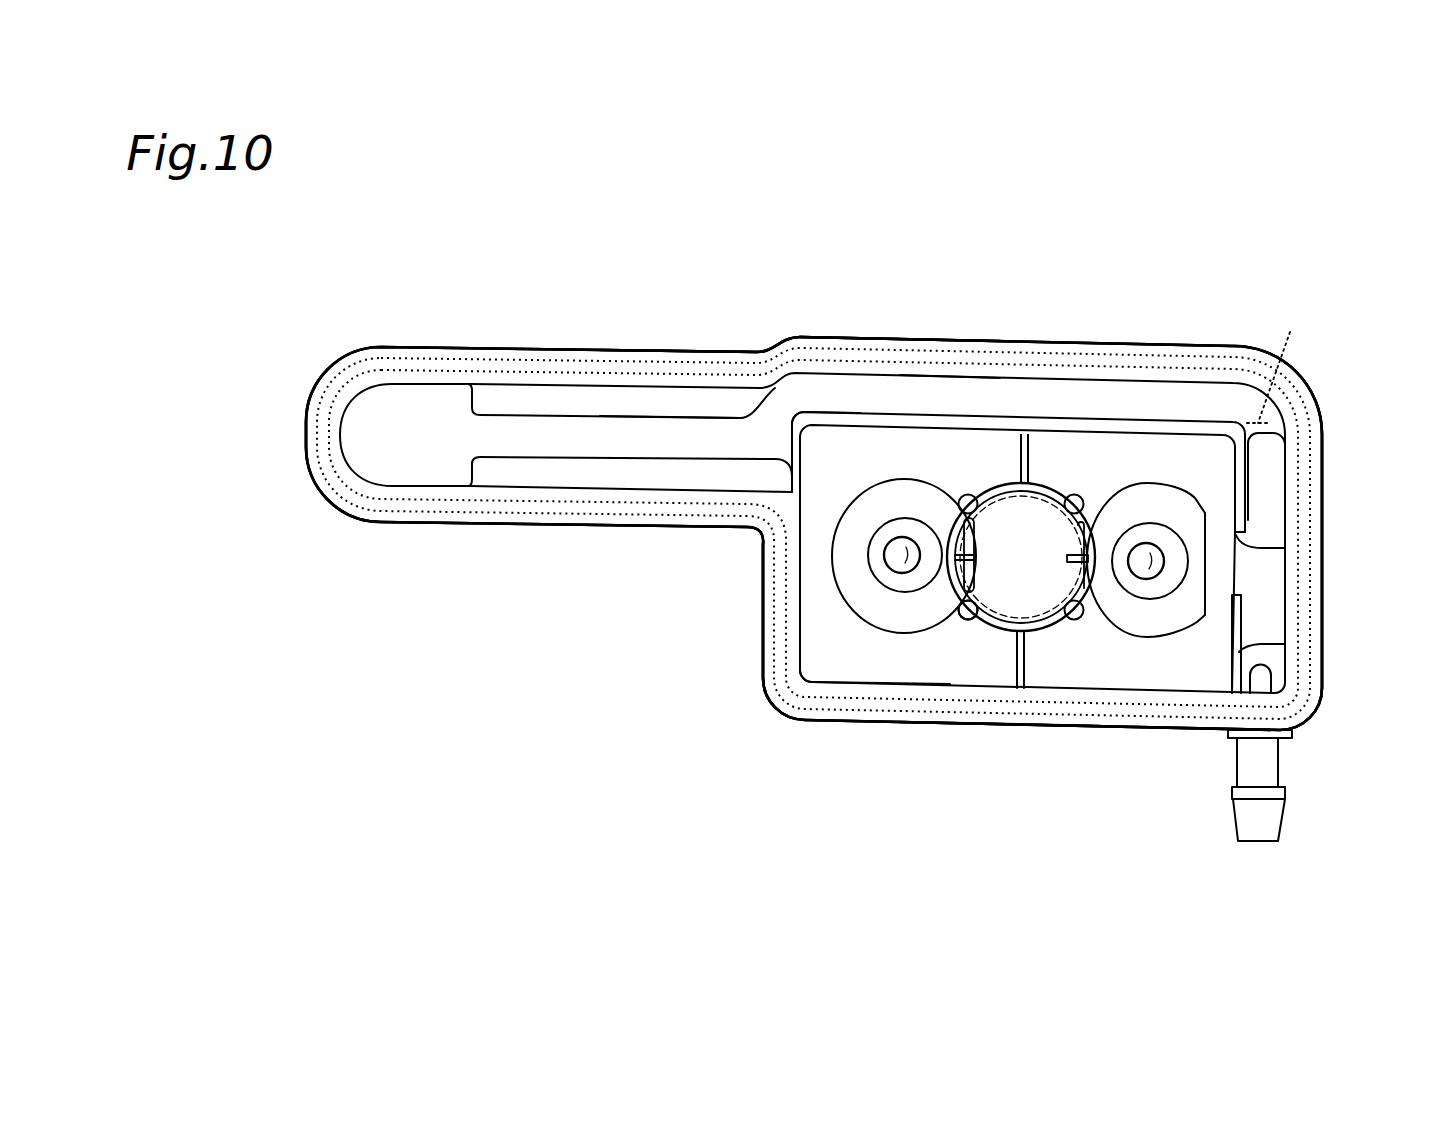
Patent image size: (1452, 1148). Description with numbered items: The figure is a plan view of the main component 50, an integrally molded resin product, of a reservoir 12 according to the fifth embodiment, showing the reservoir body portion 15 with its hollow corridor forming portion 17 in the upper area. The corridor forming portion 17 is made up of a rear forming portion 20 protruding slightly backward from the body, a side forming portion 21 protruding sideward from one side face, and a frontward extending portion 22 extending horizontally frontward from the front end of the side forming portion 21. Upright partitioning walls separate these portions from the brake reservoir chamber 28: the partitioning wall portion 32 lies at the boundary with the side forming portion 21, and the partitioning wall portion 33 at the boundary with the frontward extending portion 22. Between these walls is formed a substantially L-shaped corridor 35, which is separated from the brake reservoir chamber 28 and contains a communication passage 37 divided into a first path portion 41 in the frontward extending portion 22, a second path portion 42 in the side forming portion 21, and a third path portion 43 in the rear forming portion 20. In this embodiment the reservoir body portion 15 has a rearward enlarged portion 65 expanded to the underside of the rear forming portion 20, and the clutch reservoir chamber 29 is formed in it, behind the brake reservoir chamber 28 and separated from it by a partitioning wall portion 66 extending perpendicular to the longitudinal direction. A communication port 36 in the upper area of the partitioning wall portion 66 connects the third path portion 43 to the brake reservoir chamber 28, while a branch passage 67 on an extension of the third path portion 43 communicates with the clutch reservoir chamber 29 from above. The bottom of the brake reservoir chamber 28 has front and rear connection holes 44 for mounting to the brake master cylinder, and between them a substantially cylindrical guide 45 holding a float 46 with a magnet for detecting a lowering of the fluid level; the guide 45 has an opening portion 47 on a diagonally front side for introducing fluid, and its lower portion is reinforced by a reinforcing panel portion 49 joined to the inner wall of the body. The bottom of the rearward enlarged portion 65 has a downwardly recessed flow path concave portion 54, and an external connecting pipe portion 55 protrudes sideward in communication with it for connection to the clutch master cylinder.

The reservoir 12 is at (814, 533).
The reservoir body portion 15 is at (998, 727).
The corridor forming portion 17 is at (652, 351).
The rear forming portion 20 is at (1323, 502).
The side forming portion 21 is at (918, 337).
The frontward extending portion 22 is at (510, 346).
The brake reservoir chamber 28 is at (870, 670).
The clutch reservoir chamber 29 is at (1272, 622).
The partitioning wall portion 32 is at (1145, 420).
The partitioning wall portion 33 is at (806, 462).
The corridor 35 is at (963, 395).
The communication port 36 is at (1266, 548).
The communication passage 37 is at (727, 438).
The first path portion 41 is at (580, 430).
The second path portion 42 is at (1043, 393).
The third path portion 43 is at (1272, 473).
The connection holes 44 is at (888, 549).
The guide 45 is at (1045, 632).
The float 46 is at (984, 624).
The opening portion 47 is at (980, 490).
The reinforcing panel portion 49 is at (1032, 458).
The main component 50 is at (1326, 358).
The flow path concave portion 54 is at (1263, 681).
The external connecting pipe portion 55 is at (1277, 823).
The rearward enlarged portion 65 is at (1278, 362).
The partitioning wall portion 66 is at (1282, 646).
The branch passage 67 is at (1247, 657).